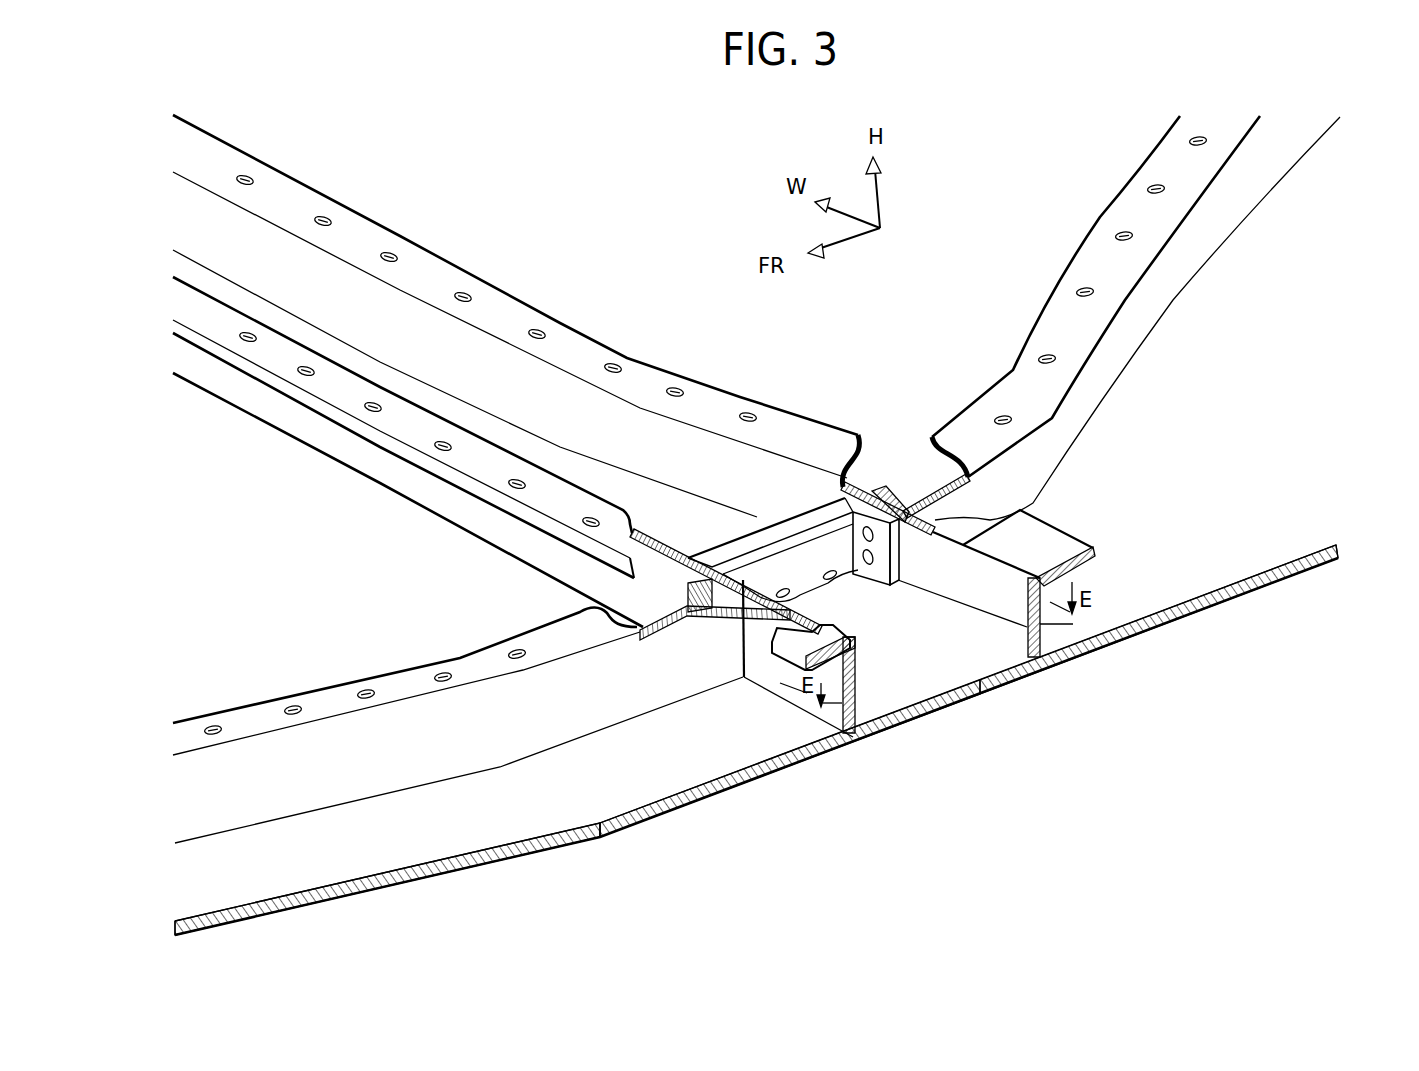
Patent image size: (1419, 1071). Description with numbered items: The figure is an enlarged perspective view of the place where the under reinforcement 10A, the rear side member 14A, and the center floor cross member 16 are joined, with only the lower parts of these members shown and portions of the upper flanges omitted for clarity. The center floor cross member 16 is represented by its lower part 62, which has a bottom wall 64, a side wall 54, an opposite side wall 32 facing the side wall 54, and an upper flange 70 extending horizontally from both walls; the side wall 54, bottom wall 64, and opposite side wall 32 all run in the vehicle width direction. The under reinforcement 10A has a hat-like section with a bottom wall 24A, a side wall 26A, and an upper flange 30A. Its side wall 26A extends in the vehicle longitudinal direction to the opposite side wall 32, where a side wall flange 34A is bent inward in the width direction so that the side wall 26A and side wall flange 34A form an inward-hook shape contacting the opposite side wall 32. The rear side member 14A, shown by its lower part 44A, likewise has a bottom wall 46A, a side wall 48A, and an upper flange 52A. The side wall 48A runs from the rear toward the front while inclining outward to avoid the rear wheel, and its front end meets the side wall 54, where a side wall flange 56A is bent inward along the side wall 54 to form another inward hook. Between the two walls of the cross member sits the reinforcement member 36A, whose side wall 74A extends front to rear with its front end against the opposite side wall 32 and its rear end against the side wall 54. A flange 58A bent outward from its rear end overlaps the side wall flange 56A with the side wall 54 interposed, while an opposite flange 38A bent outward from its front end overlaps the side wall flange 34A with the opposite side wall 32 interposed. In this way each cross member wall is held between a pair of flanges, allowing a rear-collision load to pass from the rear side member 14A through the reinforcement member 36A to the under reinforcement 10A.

The under reinforcement 10A is at (603, 877).
The rear side member 14A is at (1227, 645).
The rear side member lower part 44A is at (755, 740).
The center floor cross member 16 is at (507, 255).
The center floor cross member lower part 62 is at (888, 485).
The bottom wall 24A is at (430, 832).
The side wall 26A is at (430, 707).
The upper flange 30A is at (267, 707).
The opposite side wall 32 is at (372, 462).
The side wall flange 34A is at (688, 590).
The reinforcement member 36A is at (688, 533).
The opposite flange 38A is at (720, 585).
The bottom wall 46A is at (1298, 528).
The side wall 48A is at (1172, 255).
The upper flange 52A is at (1160, 162).
The side wall 54 is at (560, 405).
The side wall flange 56A is at (900, 500).
The flange 58A is at (880, 527).
The bottom wall 64 is at (263, 318).
The upper flange 70 is at (357, 242).
The side wall 74A is at (792, 562).